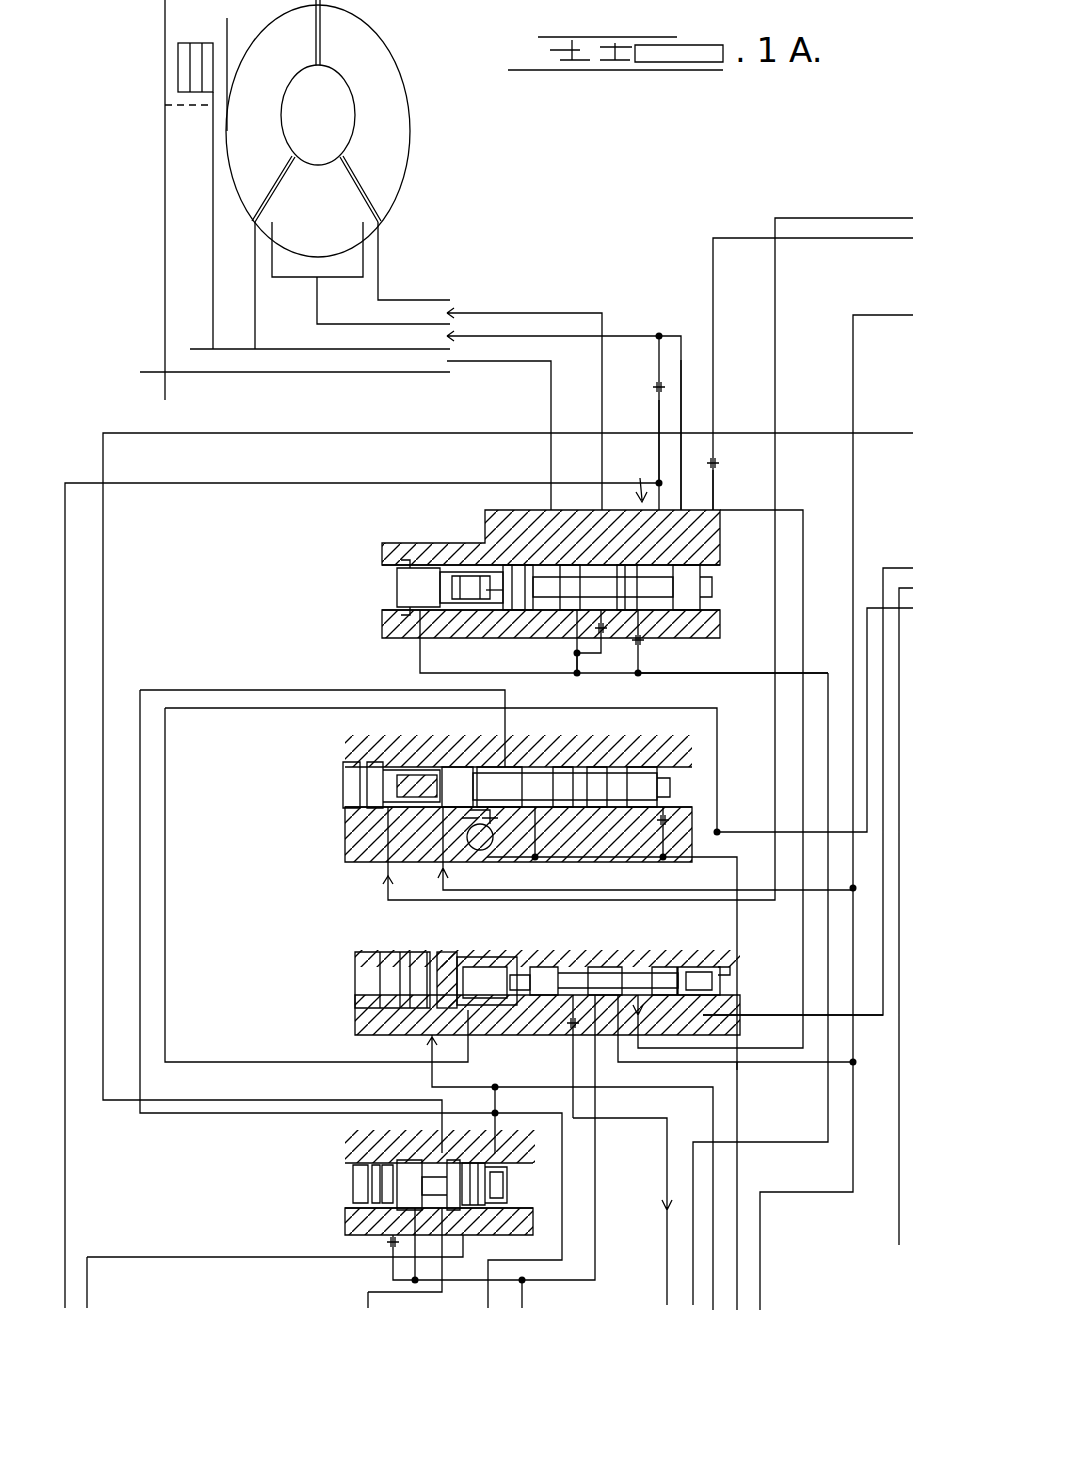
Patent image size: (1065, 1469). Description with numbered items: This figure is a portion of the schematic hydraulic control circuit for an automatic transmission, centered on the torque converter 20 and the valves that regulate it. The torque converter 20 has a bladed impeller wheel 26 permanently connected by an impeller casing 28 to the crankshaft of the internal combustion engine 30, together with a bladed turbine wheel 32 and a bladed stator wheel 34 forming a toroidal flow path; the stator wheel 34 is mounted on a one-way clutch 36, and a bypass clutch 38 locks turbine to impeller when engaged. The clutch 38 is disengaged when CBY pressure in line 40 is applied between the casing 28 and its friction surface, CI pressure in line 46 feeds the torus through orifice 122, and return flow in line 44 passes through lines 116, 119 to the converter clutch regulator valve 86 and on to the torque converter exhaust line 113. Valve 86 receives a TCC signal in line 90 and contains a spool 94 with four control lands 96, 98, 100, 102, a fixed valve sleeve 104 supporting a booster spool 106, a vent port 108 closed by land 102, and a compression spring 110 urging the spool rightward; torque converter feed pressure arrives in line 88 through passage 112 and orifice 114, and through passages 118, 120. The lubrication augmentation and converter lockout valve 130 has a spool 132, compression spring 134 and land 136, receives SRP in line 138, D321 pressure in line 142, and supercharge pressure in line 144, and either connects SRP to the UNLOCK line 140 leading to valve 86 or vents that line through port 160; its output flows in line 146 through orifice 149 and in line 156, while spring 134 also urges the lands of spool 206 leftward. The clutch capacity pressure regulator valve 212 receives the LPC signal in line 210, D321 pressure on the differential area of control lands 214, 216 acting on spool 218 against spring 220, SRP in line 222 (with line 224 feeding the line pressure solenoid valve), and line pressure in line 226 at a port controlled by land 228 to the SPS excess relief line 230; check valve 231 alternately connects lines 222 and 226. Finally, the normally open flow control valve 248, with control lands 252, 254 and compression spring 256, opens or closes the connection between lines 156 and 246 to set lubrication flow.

The torque converter 20 is at (505, 75).
The bladed impeller wheel 26 is at (360, 126).
The impeller casing 28 is at (190, 4).
The internal combustion engine 30 is at (150, 372).
The bladed turbine wheel 32 is at (263, 143).
The bladed stator wheel 34 is at (328, 213).
The one-way clutch 36 is at (290, 268).
The torque converter bypass clutch 38 is at (178, 70).
The CBY pressure line 40 is at (493, 361).
The CT pressure line 44 is at (640, 336).
The CI pressure line 46 is at (572, 313).
The converter clutch regulator valve 86 is at (635, 451).
The torque converter feed line 88 is at (828, 673).
The TCC pressure signal line 90 is at (730, 238).
The spool 94 is at (530, 577).
The control land 96 is at (700, 590).
The control land 98 is at (635, 577).
The control land 100 is at (580, 577).
The control land 102 is at (505, 543).
The valve sleeve 104 is at (403, 568).
The booster spool 106 is at (455, 572).
The vent port 108 is at (500, 612).
The compression spring 110 is at (430, 612).
The passage 112 is at (645, 672).
The torque converter exhaust line 113 is at (290, 490).
The orifice 114 is at (645, 638).
The line 116 is at (683, 368).
The passage 118 is at (575, 645).
The line 119 is at (713, 497).
The passage 120 is at (590, 668).
The orifice 122 is at (604, 630).
The lubrication augmentation and converter lockout valve 130 is at (611, 957).
The spool 132 is at (635, 975).
The compression spring 134 is at (725, 972).
The land 136 is at (690, 975).
The SRP line 138 is at (748, 1070).
The UNLOCK line 140 is at (803, 520).
The D321 pressure line 142 is at (325, 1062).
The supercharge pressure line 144 is at (646, 1087).
The lubrication output line 146 is at (613, 1118).
The orifice 149 is at (570, 1030).
The line 156 is at (597, 1205).
The vent port 160 is at (645, 1015).
The spool 206 is at (462, 962).
The LPC pressure line 210 is at (860, 218).
The clutch capacity pressure regulator valve 212 is at (596, 759).
The control land 214 is at (608, 787).
The control land 216 is at (668, 787).
The spool 218 is at (535, 785).
The spring 220 is at (395, 778).
The SRP line 222 is at (600, 895).
The SRP line 224 is at (853, 388).
The line pressure line 226 is at (595, 857).
The land 228 is at (495, 785).
The SPS excess relief line 230 is at (290, 690).
The check valve 231 is at (478, 845).
The line 246 is at (103, 555).
The flow control valve 248 is at (478, 1231).
The control land 252 is at (455, 1175).
The control land 254 is at (410, 1175).
The compression spring 256 is at (505, 1175).